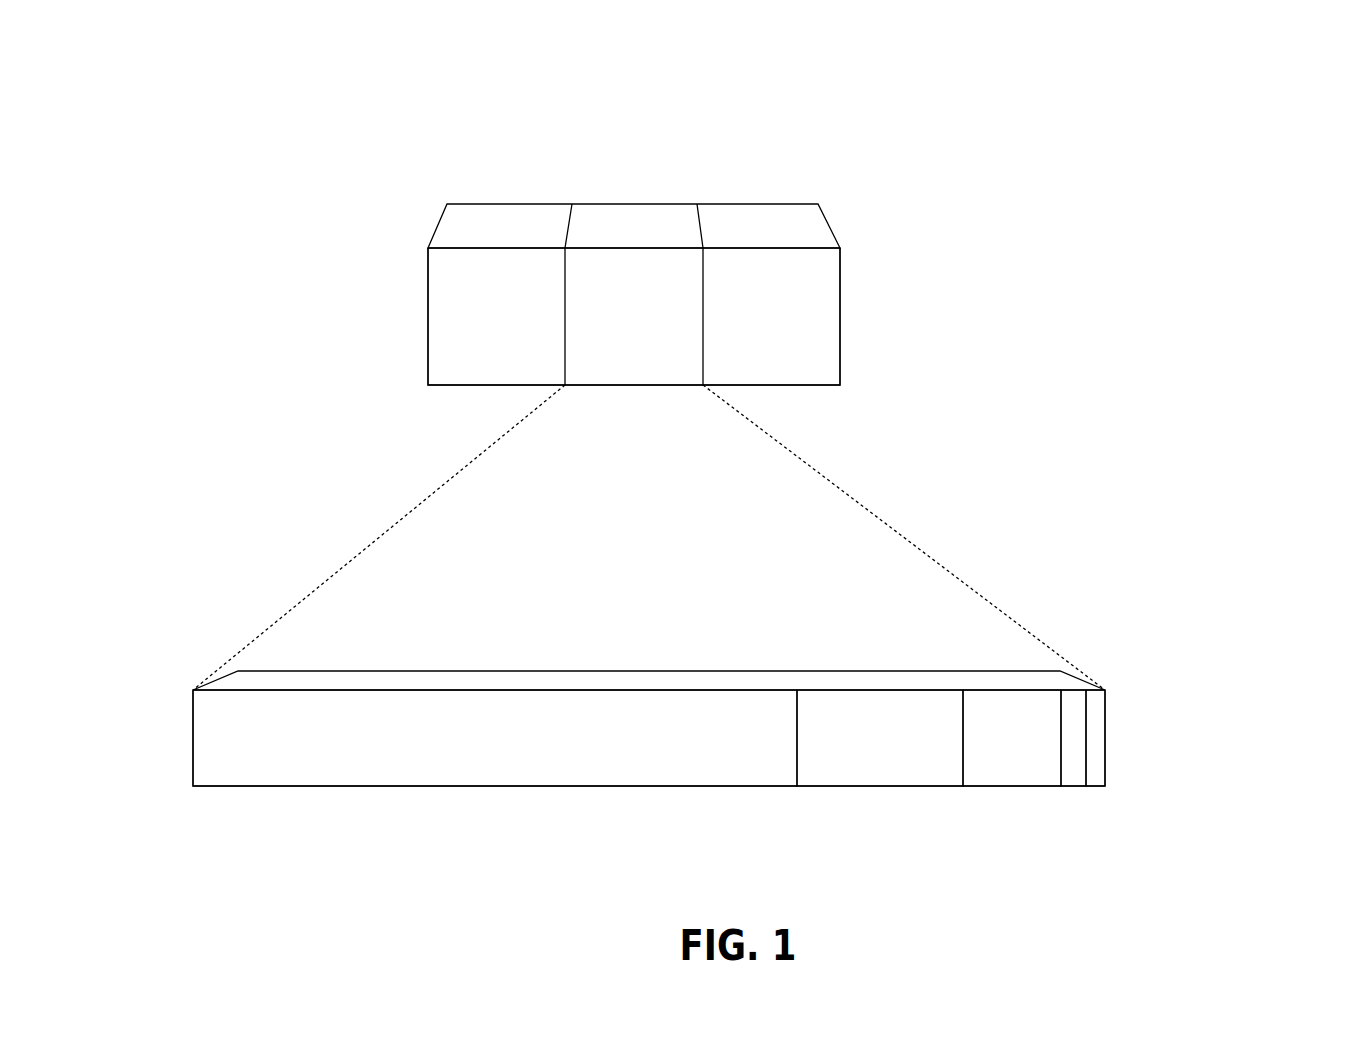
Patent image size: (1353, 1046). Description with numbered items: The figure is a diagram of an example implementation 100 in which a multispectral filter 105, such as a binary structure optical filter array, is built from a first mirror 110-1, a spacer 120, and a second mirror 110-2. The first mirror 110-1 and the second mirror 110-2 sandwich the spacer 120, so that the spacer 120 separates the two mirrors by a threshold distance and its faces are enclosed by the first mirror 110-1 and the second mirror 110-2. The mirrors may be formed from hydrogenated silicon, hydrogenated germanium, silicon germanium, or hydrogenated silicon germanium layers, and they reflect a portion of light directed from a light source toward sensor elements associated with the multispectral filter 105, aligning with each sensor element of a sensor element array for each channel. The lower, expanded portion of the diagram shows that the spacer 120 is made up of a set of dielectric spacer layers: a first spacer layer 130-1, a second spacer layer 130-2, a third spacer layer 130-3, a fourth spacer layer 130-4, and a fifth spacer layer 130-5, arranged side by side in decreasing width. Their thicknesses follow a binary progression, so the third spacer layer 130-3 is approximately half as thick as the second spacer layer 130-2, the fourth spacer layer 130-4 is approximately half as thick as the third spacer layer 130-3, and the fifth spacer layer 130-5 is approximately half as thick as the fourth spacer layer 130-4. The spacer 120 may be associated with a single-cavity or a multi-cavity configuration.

The example implementation 100 is at (233, 62).
The multispectral filter 105 is at (428, 208).
The first mirror 110-1 is at (525, 341).
The spacer 120 is at (615, 341).
The second mirror 110-2 is at (742, 341).
The first spacer layer 130-1 is at (495, 774).
The second spacer layer 130-2 is at (882, 774).
The third spacer layer 130-3 is at (1012, 773).
The fourth spacer layer 130-4 is at (1078, 772).
The fifth spacer layer 130-5 is at (1101, 733).